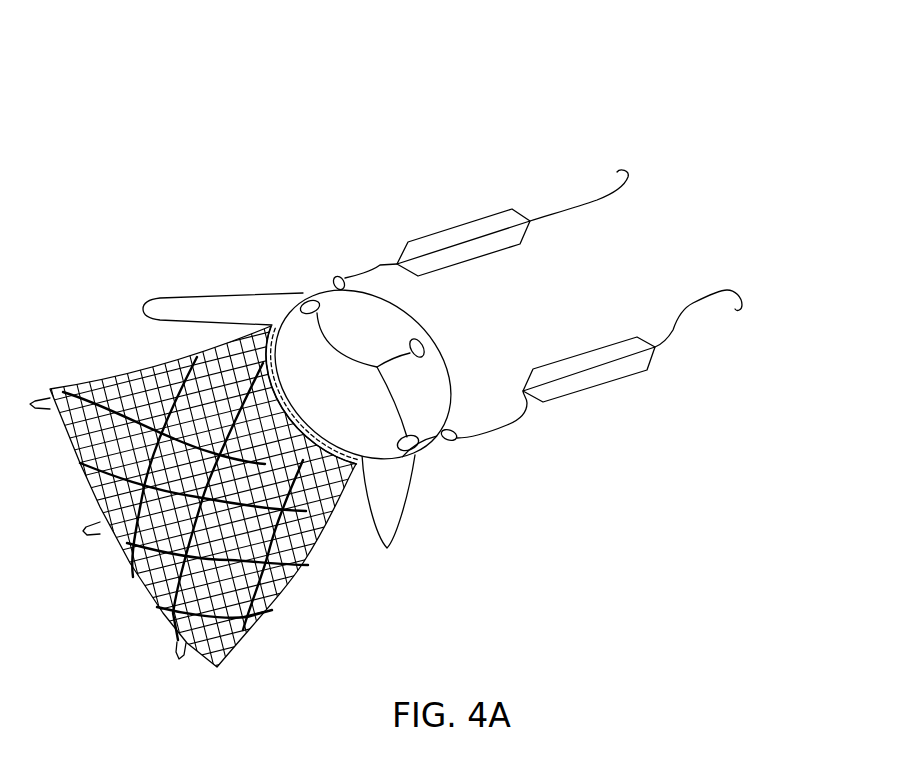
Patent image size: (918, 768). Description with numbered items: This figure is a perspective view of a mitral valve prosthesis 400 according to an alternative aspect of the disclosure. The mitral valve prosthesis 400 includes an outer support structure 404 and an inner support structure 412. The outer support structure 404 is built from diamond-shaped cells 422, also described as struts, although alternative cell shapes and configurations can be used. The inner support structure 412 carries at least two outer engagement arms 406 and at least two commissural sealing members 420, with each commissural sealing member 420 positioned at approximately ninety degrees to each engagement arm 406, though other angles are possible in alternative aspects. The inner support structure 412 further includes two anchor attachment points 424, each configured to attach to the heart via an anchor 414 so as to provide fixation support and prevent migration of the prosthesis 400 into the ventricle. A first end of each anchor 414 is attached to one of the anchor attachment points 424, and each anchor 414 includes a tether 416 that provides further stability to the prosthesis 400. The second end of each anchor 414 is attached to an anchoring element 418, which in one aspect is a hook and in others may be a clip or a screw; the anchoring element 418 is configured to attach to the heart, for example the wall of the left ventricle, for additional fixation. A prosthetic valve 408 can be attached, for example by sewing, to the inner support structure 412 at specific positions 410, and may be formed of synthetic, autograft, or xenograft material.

The mitral valve prosthesis 400 is at (691, 63).
The outer support structure 404 is at (255, 632).
The outer engagement arm 406 is at (167, 294).
The prosthetic valve 408 is at (385, 316).
The specific positions 410 is at (440, 344).
The inner support structure 412 is at (431, 455).
The anchor 414 is at (381, 262).
The tether 416 is at (464, 221).
The anchoring element 418 is at (634, 173).
The commissural sealing member 420 is at (249, 380).
The diamond-shaped cells 422 is at (88, 509).
The anchor attachment point 424 is at (339, 277).